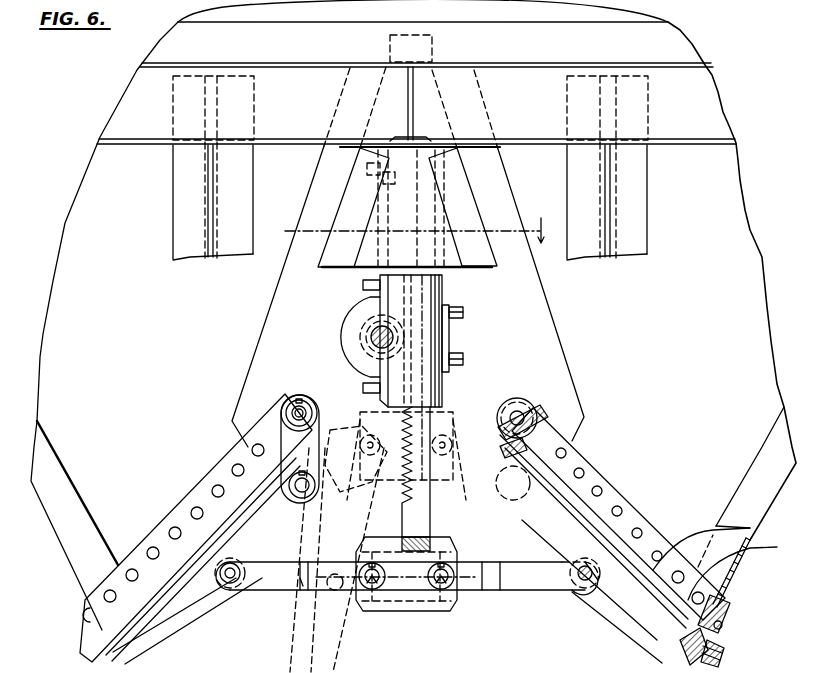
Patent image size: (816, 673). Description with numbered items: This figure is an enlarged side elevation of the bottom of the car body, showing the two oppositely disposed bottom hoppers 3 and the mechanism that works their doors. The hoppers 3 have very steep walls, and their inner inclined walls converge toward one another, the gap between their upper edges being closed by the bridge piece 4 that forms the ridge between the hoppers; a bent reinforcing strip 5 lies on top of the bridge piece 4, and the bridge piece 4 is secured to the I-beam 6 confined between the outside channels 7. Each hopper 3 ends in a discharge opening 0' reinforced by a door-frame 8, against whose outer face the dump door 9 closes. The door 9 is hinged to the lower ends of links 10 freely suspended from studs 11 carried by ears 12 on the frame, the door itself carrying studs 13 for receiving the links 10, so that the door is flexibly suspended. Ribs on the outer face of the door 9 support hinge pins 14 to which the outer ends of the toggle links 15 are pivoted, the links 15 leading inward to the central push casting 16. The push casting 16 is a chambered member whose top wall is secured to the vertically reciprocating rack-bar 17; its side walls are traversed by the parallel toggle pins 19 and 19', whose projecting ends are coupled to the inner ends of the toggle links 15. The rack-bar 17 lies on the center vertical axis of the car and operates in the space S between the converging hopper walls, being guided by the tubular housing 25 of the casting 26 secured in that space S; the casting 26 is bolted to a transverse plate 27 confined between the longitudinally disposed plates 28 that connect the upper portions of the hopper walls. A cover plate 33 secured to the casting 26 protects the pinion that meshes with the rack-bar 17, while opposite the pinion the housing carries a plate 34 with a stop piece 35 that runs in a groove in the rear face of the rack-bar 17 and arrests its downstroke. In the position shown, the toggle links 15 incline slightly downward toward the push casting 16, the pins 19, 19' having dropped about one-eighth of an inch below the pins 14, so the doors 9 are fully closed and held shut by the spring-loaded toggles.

The space S is at (540, 313).
The bottom hoppers 3 is at (278, 290).
The bridge piece 4 is at (452, 88).
The bent reinforcing strip 5 is at (432, 48).
The I-beam 6 is at (415, 120).
The outside channels 7 is at (703, 135).
The door-frame 8 is at (93, 601).
The dump door 9 is at (165, 640).
The links 10 is at (318, 425).
The studs 11 is at (286, 418).
The ears 12 is at (514, 405).
The studs 13 is at (290, 489).
The hinge pins 14 is at (226, 582).
The toggle links 15 is at (262, 578).
The push casting 16 is at (385, 598).
The rack-bar 17 is at (457, 532).
The hinge pin 19 is at (437, 601).
The hinge pin 19' is at (362, 609).
The housing 25 is at (445, 268).
The casting 26 is at (388, 210).
The transverse plate 27 is at (363, 190).
The longitudinally disposed plates 28 is at (428, 193).
The cover plate 33 is at (343, 330).
The plate 34 is at (476, 343).
The stop piece 35 is at (463, 360).
The discharge openings 0' is at (748, 551).